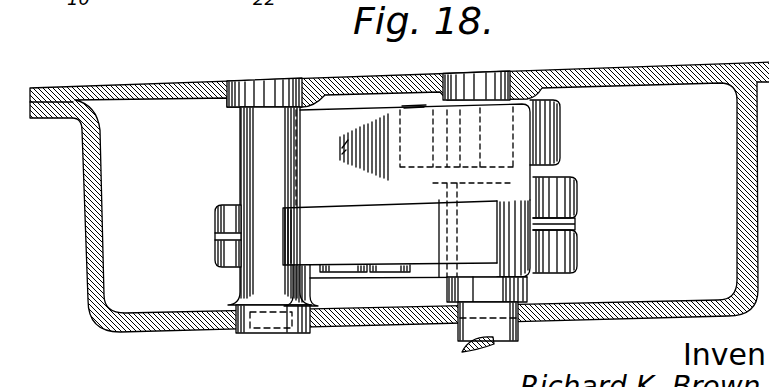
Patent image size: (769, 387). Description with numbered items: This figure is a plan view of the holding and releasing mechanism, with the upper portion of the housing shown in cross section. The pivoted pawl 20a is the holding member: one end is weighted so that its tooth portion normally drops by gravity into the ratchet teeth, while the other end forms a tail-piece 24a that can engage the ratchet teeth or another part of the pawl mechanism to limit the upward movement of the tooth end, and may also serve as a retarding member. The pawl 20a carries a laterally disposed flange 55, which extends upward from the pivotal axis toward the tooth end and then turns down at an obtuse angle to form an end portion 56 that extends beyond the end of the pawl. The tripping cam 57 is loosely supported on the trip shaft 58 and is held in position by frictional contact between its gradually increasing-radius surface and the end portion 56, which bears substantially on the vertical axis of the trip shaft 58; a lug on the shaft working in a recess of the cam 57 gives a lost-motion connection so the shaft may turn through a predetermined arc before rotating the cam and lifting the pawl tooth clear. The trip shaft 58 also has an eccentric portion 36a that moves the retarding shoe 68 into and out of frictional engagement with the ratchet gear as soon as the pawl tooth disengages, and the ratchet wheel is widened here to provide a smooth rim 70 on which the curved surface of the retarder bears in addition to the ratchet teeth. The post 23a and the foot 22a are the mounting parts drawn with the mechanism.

The post 23a is at (276, 112).
The laterally disposed flange 55 is at (363, 128).
The end portion 56 is at (473, 157).
The tripping cam 57 is at (561, 106).
The eccentric portion 36a is at (520, 220).
The retarding shoe 68 is at (579, 239).
The tail-piece 24a is at (227, 270).
The foot 22a is at (268, 323).
The pivoted pawl 20a is at (385, 257).
The smooth rim 70 is at (407, 278).
The trip shaft 58 is at (466, 346).